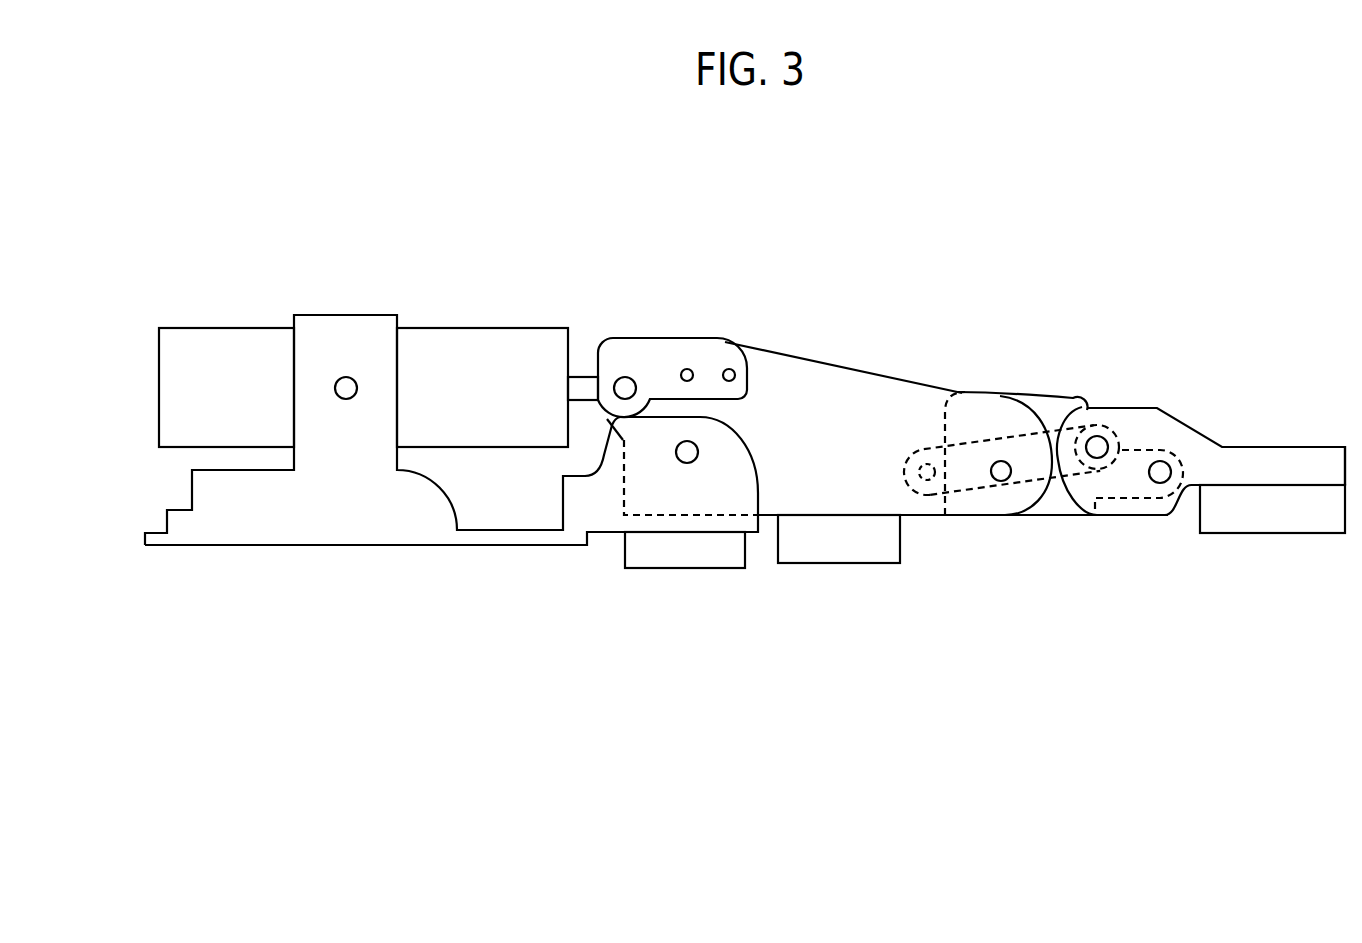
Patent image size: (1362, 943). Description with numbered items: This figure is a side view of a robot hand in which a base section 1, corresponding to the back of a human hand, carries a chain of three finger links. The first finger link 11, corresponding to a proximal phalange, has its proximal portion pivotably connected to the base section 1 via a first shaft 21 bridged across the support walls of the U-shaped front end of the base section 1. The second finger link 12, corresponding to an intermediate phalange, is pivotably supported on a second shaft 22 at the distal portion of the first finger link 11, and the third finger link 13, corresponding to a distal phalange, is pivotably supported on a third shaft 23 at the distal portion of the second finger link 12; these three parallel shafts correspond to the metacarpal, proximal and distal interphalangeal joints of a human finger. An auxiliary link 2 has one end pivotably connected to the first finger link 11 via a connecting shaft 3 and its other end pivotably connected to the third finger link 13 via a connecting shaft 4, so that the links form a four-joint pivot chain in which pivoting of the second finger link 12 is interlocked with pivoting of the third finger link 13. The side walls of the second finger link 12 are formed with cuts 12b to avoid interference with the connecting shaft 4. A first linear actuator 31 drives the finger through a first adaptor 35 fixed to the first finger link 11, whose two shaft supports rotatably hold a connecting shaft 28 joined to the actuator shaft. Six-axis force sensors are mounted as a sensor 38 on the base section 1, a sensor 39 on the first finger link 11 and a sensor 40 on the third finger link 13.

The base section 1 is at (424, 530).
The auxiliary link 2 is at (1004, 440).
The connecting shaft 3 is at (924, 484).
The connecting shaft 4 is at (1106, 463).
The first finger link 11 is at (815, 495).
The second finger link 12 is at (1057, 500).
The cut 12b is at (1072, 448).
The third finger link 13 is at (1252, 476).
The first shaft 21 is at (687, 464).
The second shaft 22 is at (990, 473).
The third shaft 23 is at (1163, 483).
The connecting shaft 28 is at (631, 376).
The first linear actuator 31 is at (492, 345).
The first adaptor 35 is at (694, 350).
The sensor 38 is at (722, 560).
The sensor 39 is at (862, 550).
The sensor 40 is at (1310, 520).